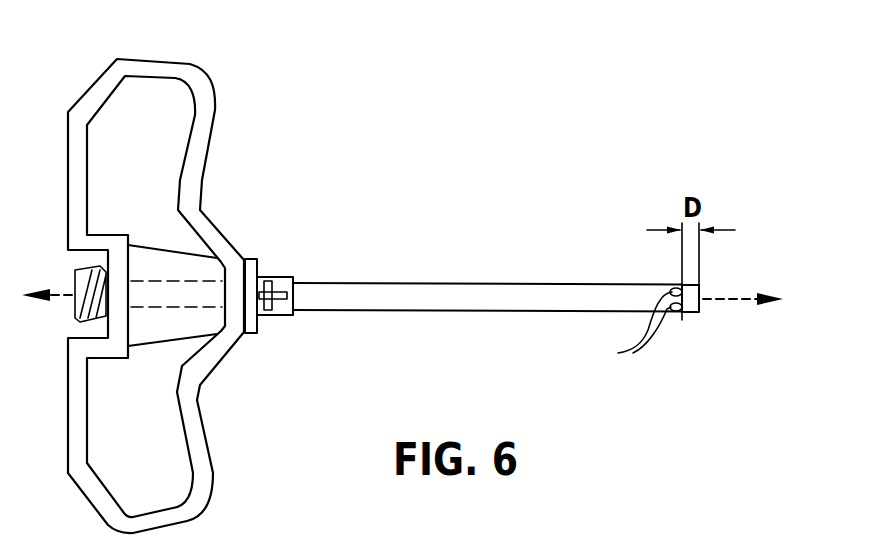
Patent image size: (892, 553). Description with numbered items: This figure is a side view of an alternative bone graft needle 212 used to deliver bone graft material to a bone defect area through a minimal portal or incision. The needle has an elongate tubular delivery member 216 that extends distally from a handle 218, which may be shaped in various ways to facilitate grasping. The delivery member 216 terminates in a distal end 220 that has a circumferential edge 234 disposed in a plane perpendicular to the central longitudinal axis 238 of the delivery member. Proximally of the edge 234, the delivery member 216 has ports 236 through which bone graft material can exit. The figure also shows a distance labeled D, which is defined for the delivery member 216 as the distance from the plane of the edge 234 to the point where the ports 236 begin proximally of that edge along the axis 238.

The bone graft needle 212 is at (450, 248).
The delivery member 216 is at (400, 280).
The handle 218 is at (71, 90).
The distal end 220 is at (704, 290).
The circumferential edge 234 is at (704, 309).
The ports 236 is at (625, 329).
The central longitudinal axis 238 is at (745, 300).